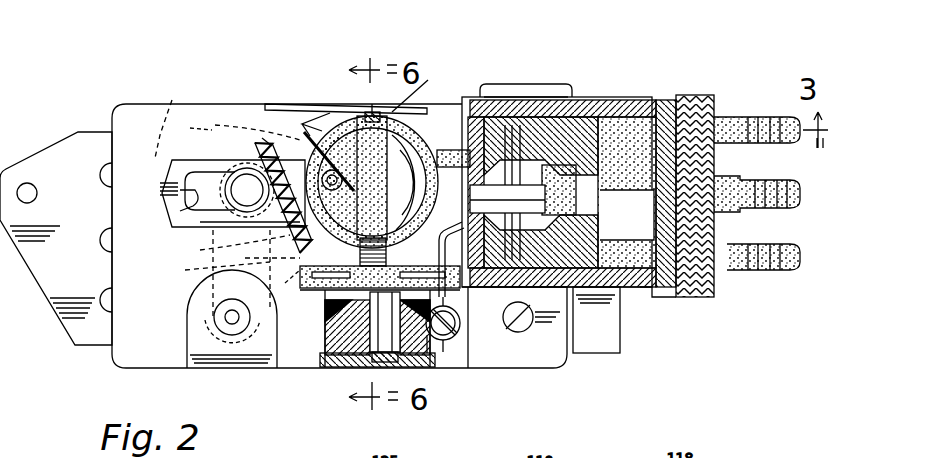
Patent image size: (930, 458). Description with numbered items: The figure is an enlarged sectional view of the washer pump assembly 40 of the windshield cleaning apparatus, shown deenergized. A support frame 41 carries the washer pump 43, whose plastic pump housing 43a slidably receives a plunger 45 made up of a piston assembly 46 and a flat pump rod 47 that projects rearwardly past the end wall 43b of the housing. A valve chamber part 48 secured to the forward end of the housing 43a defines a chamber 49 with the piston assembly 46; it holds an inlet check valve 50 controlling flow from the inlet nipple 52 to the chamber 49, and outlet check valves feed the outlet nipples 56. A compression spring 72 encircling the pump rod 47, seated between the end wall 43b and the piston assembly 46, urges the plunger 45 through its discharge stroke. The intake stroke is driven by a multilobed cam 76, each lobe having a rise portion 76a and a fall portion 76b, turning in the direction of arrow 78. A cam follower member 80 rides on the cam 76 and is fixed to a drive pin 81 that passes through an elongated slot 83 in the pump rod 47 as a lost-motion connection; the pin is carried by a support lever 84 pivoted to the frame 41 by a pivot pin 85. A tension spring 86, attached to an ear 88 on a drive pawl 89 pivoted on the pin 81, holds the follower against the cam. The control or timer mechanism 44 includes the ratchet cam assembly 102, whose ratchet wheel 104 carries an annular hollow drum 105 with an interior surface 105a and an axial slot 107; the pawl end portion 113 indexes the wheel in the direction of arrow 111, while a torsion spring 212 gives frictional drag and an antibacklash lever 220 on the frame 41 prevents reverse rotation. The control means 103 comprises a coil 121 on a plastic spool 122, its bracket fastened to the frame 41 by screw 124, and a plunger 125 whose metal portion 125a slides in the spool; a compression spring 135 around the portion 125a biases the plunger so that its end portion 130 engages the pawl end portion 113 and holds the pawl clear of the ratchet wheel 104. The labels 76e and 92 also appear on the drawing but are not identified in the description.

The washer pump assembly 40 is at (376, 104).
The support frame 41 is at (125, 118).
The washer pump 43 is at (647, 90).
The pump housing 43a is at (627, 192).
The end wall of housing 43b is at (526, 92).
The control or timer mechanism 44 is at (308, 351).
The plunger 45 is at (574, 100).
The piston assembly 46 is at (610, 226).
The pump rod 47 is at (525, 191).
The valve chamber part 48 is at (686, 96).
The chamber 49 is at (640, 281).
The inlet check valve 50 is at (668, 184).
The inlet nipple 52 is at (760, 181).
The outlet nipples 56 is at (750, 117).
The compression spring 72 is at (526, 93).
The multilobed cam 76 is at (262, 122).
The rise portion 76a is at (302, 99).
The fall portion 76b is at (282, 284).
The spring arm 76e is at (257, 125).
The arrow 78 is at (168, 119).
The cam follower member 80 is at (168, 177).
The drive pin 81 is at (245, 185).
The elongated slot 83 is at (200, 222).
The support lever 84 is at (218, 271).
The pivot pin 85 is at (230, 318).
The tension spring 86 is at (265, 270).
The ear 88 is at (201, 123).
The drive pawl 89 is at (272, 142).
The hook 92 is at (180, 203).
The ratchet cam assembly 102 is at (452, 243).
The control means 103 is at (340, 367).
The ratchet wheel 104 is at (446, 150).
The annular hollow drum 105 is at (475, 192).
The interior surface of drum 105a is at (502, 205).
The through slot 107 is at (419, 87).
The arrow 111 is at (520, 324).
The end portion of pawl 113 is at (345, 106).
The coil 121 is at (438, 335).
The spool 122 is at (412, 367).
The screw 124 is at (456, 337).
The plunger 125 is at (386, 196).
The metal portion of plunger 125a is at (370, 325).
The axially extending end portion 130 is at (375, 112).
The compression spring 135 is at (330, 288).
The torsion spring 212 is at (314, 158).
The antibacklash lever 220 is at (458, 324).